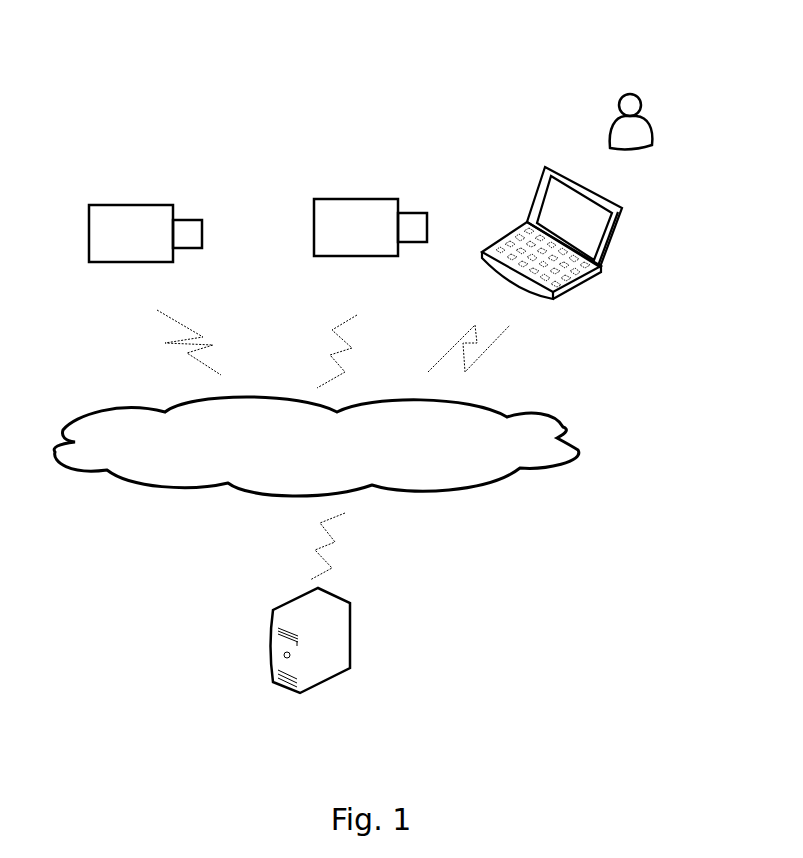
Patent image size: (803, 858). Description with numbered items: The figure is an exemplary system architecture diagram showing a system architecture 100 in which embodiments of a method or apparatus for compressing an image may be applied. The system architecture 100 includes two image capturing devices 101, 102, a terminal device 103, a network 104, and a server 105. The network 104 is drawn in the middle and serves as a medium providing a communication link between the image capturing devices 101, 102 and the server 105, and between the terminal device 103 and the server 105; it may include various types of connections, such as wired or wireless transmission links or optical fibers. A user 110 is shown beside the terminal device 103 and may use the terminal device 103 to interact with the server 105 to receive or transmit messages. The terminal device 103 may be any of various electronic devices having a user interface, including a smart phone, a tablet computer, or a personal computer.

The system architecture 100 is at (534, 21).
The image capturing device 101 is at (145, 250).
The image capturing device 102 is at (370, 249).
The terminal device 103 is at (552, 248).
The network 104 is at (316, 446).
The server 105 is at (311, 660).
The user 110 is at (650, 121).